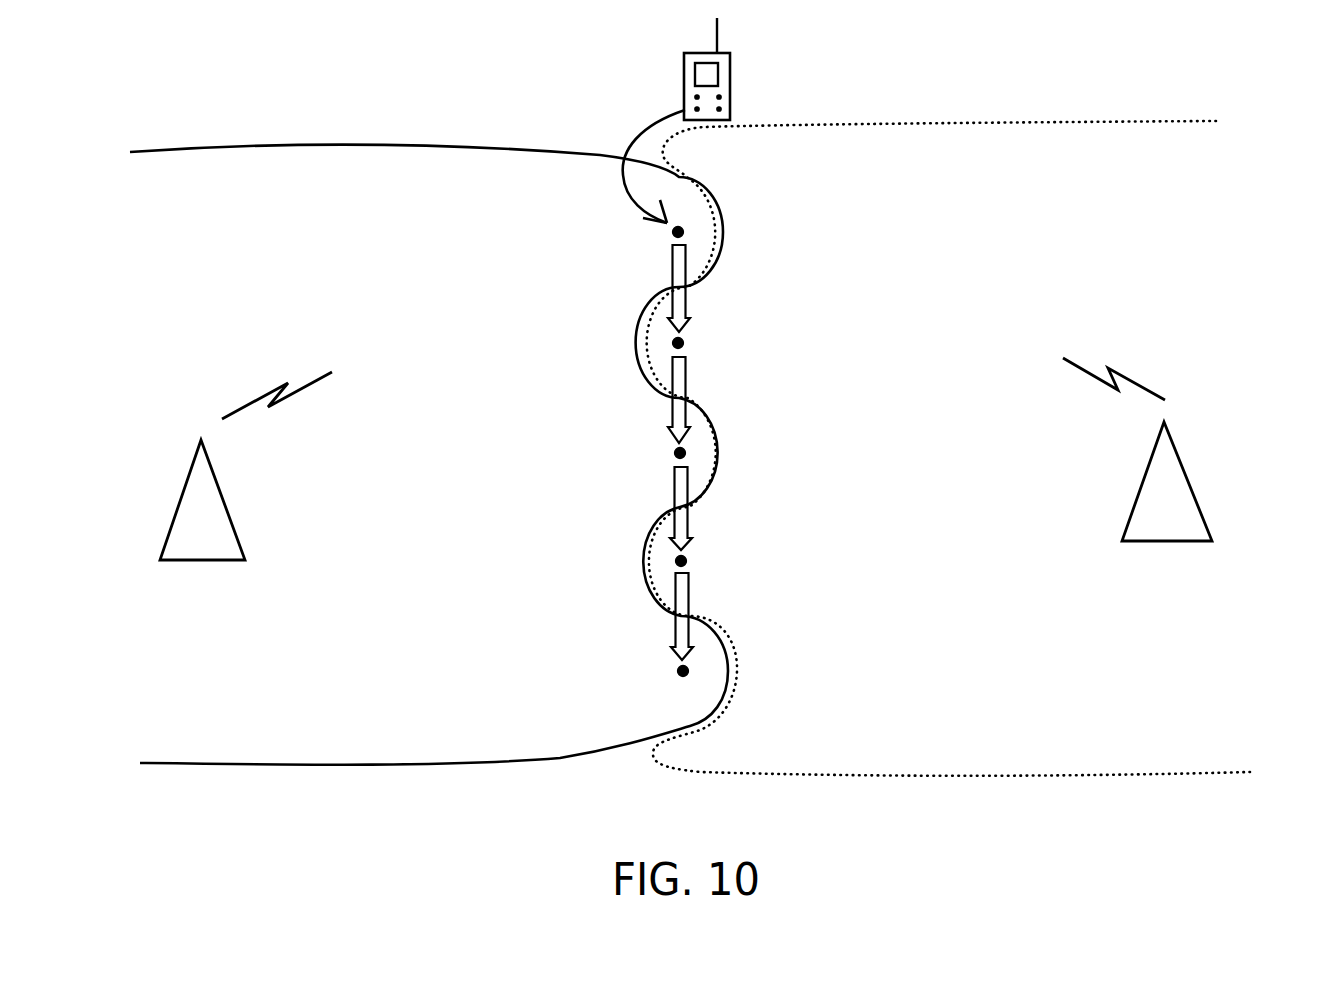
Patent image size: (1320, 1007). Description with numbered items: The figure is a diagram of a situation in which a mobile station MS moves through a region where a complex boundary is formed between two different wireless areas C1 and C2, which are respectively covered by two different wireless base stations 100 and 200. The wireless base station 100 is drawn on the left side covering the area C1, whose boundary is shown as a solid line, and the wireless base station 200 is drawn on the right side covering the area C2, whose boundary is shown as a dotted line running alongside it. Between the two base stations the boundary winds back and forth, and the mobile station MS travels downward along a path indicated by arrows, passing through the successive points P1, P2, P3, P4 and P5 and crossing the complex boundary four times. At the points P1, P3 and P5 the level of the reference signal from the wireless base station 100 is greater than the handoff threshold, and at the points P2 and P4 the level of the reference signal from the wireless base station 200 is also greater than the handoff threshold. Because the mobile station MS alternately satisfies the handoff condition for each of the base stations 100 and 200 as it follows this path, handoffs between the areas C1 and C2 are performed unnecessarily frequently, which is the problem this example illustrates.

The mobile station MS is at (732, 97).
The area C1 is at (349, 140).
The area C2 is at (910, 122).
The wireless base station 100 is at (157, 549).
The wireless base station 200 is at (1130, 510).
The point P1 is at (673, 232).
The point P2 is at (684, 341).
The point P3 is at (675, 453).
The point P4 is at (686, 560).
The point P5 is at (678, 670).